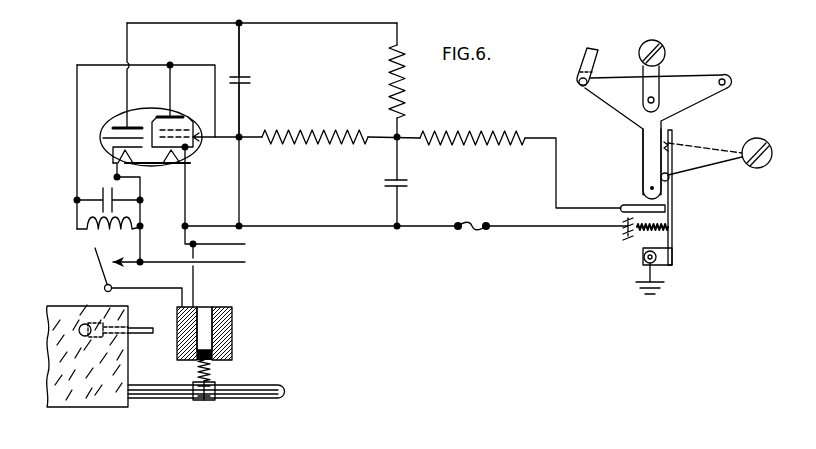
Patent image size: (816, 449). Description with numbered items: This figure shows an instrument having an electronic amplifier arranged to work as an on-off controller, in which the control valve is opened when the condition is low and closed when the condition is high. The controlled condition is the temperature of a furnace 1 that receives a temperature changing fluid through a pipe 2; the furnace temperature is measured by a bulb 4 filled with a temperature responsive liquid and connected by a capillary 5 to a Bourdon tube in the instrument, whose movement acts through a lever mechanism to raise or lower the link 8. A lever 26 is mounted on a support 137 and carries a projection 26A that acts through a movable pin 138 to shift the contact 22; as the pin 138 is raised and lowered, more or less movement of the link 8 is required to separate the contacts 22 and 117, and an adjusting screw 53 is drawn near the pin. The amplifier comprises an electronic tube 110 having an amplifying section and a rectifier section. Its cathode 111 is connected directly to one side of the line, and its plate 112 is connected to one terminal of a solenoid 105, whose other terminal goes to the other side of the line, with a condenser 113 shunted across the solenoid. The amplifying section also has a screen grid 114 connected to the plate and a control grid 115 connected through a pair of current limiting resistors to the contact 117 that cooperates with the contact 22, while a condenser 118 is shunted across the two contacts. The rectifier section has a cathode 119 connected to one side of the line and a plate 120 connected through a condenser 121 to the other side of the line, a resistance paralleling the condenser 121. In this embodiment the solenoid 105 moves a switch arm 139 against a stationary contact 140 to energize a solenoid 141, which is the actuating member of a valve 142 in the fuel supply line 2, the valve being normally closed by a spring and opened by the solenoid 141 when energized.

The furnace 1 is at (53, 360).
The pipe 2 is at (256, 385).
The bulb 4 is at (80, 318).
The capillary 5 is at (143, 335).
The link 8 is at (585, 62).
The contact 22 is at (675, 206).
The lever 26 is at (677, 88).
The projection 26A is at (647, 150).
The adjusting screw 53 is at (757, 138).
The solenoid 105 is at (88, 222).
The electronic tube 110 is at (159, 230).
The cathode 111 is at (152, 164).
The plate 112 is at (157, 115).
The condenser 113 is at (100, 193).
The screen grid 114 is at (176, 115).
The control grid 115 is at (191, 152).
The contact 117 is at (630, 205).
The condenser 118 is at (385, 183).
The cathode 119 is at (103, 138).
The plate 120 is at (113, 116).
The condenser 121 is at (252, 80).
The support 137 is at (645, 74).
The movable pin 138 is at (669, 180).
The switch arm 139 is at (93, 252).
The stationary contact 140 is at (110, 256).
The solenoid 141 is at (232, 328).
The valve 142 is at (205, 400).